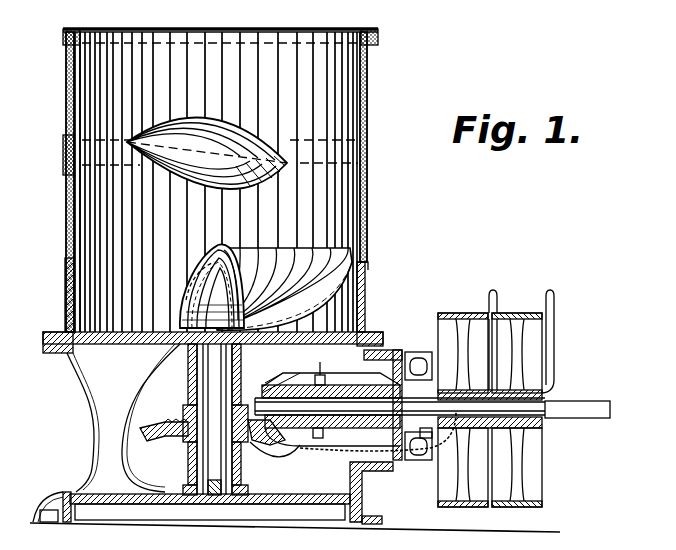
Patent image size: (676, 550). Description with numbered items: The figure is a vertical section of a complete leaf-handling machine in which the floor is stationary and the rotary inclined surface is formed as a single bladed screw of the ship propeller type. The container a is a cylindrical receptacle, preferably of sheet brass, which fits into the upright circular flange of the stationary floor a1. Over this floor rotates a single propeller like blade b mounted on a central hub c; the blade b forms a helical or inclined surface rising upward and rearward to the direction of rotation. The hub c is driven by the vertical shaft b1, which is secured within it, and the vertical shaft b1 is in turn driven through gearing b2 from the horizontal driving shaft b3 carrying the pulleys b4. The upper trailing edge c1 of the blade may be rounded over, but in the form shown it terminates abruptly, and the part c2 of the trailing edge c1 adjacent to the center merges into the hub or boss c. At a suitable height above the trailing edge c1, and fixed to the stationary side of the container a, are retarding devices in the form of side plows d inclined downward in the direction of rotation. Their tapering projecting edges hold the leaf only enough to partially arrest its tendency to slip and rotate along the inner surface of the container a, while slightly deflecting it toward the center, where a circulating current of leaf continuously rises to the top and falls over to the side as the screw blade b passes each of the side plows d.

The container a is at (364, 206).
The stationary floor a1 is at (145, 346).
The propeller like blade b is at (202, 270).
The vertical shaft b1 is at (216, 386).
The gearing b2 is at (264, 441).
The driving shaft b3 is at (332, 440).
The pulleys b4 is at (453, 478).
The hub c is at (188, 290).
The upper trailing edge c1 is at (280, 242).
The part of trailing edge adjacent to the center c2 is at (229, 246).
The side plows d is at (241, 130).